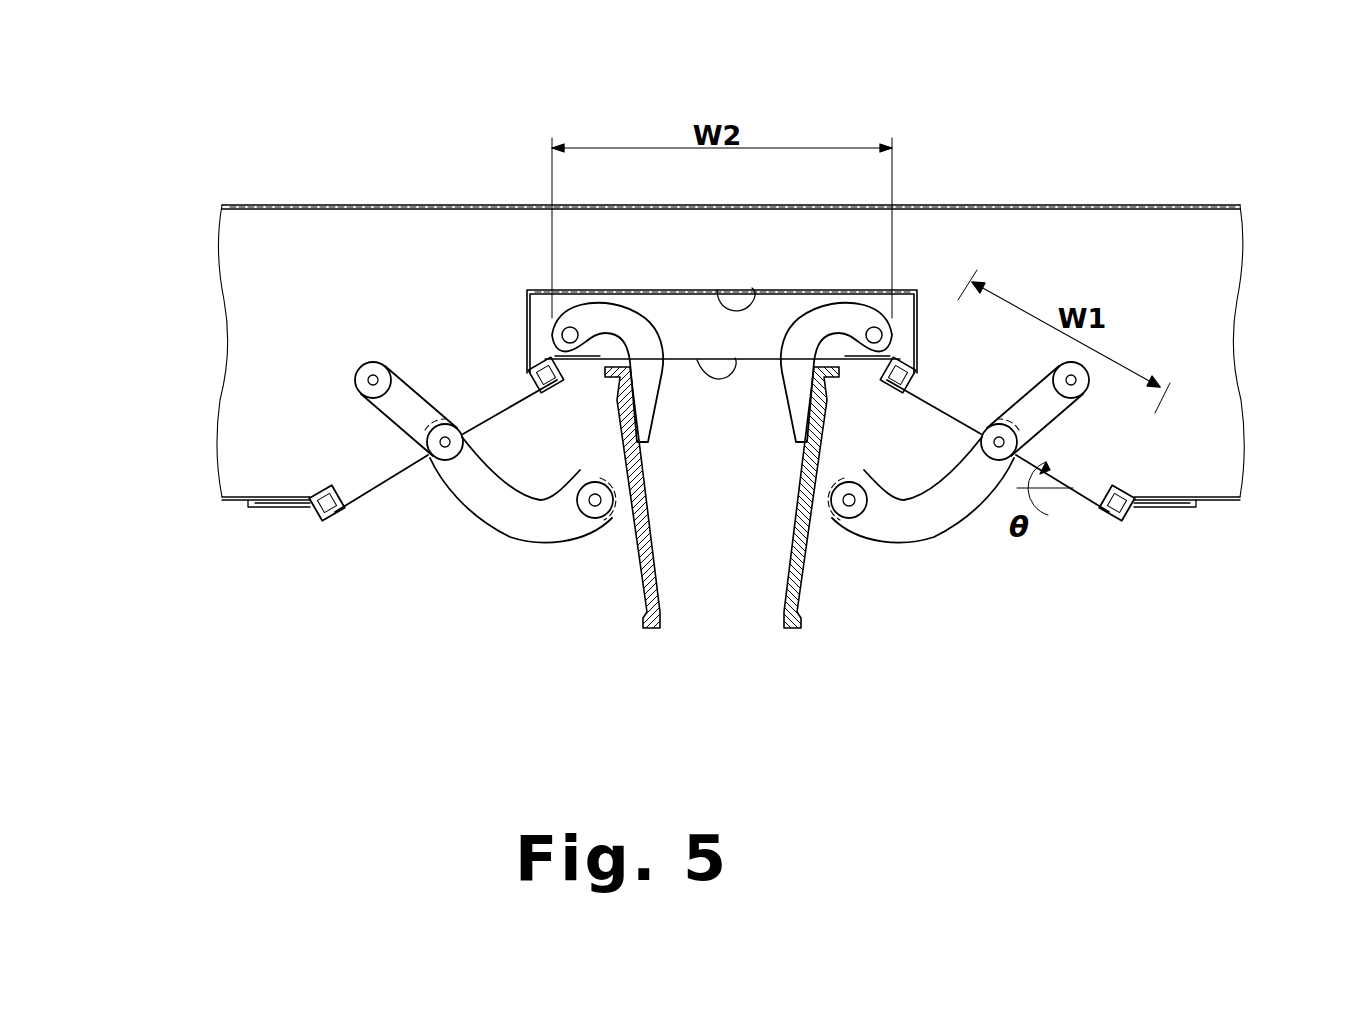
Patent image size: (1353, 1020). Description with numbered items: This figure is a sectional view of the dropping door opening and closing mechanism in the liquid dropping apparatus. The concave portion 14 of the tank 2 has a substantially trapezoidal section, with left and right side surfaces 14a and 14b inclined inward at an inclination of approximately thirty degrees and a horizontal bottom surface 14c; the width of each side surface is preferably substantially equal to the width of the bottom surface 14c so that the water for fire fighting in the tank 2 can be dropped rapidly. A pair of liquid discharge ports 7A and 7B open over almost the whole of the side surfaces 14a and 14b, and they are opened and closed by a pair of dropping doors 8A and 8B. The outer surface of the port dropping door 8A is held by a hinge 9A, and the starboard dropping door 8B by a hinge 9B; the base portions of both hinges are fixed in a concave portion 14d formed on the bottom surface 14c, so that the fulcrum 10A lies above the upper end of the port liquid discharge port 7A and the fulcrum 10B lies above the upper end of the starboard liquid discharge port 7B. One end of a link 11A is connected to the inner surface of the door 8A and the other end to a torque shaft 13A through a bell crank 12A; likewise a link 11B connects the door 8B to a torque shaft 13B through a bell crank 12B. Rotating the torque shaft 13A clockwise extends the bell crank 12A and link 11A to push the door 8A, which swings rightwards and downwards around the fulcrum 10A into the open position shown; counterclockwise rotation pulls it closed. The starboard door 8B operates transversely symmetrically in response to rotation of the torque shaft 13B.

The tank 2 is at (1133, 207).
The port liquid discharge port 7A is at (1097, 493).
The starboard liquid discharge port 7B is at (352, 515).
The port dropping door 8A is at (795, 395).
The starboard dropping door 8B is at (650, 395).
The hinge 9A is at (785, 572).
The hinge 9B is at (657, 585).
The fulcrum 10A is at (874, 347).
The fulcrum 10B is at (570, 347).
The link 11A is at (904, 497).
The link 11B is at (540, 497).
The bell crank 12A is at (1080, 390).
The bell crank 12B is at (405, 417).
The torque shaft 13A is at (1040, 415).
The torque shaft 13B is at (370, 390).
The concave portion 14 is at (735, 404).
The right side surface 14a is at (1067, 480).
The left side surface 14b is at (410, 467).
The bottom surface 14c is at (697, 360).
The concave portion 14d is at (717, 290).